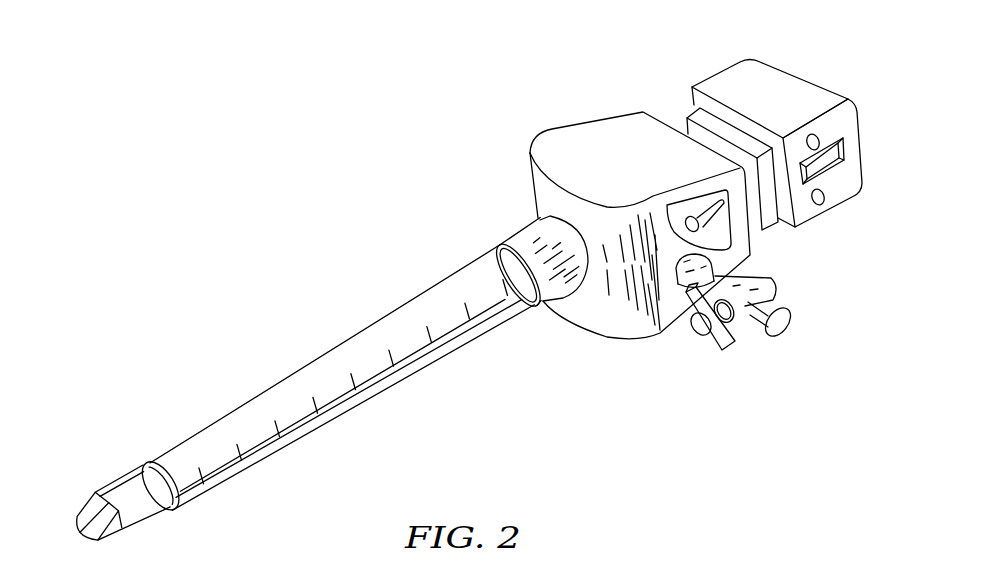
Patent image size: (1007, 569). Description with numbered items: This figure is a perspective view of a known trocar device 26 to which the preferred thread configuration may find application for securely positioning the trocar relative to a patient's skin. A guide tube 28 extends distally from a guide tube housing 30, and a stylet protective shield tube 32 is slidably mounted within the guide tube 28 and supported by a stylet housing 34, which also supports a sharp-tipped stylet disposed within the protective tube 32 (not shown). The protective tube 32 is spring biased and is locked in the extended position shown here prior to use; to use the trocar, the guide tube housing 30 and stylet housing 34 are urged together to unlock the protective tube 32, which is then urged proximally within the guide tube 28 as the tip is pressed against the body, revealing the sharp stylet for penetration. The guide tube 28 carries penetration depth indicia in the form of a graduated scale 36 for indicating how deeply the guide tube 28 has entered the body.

The trocar device 26 is at (326, 208).
The guide tube 28 is at (210, 424).
The guide tube housing 30 is at (575, 124).
The stylet protective shield tube 32 is at (115, 480).
The stylet housing 34 is at (780, 82).
The graduated scale 36 is at (405, 308).